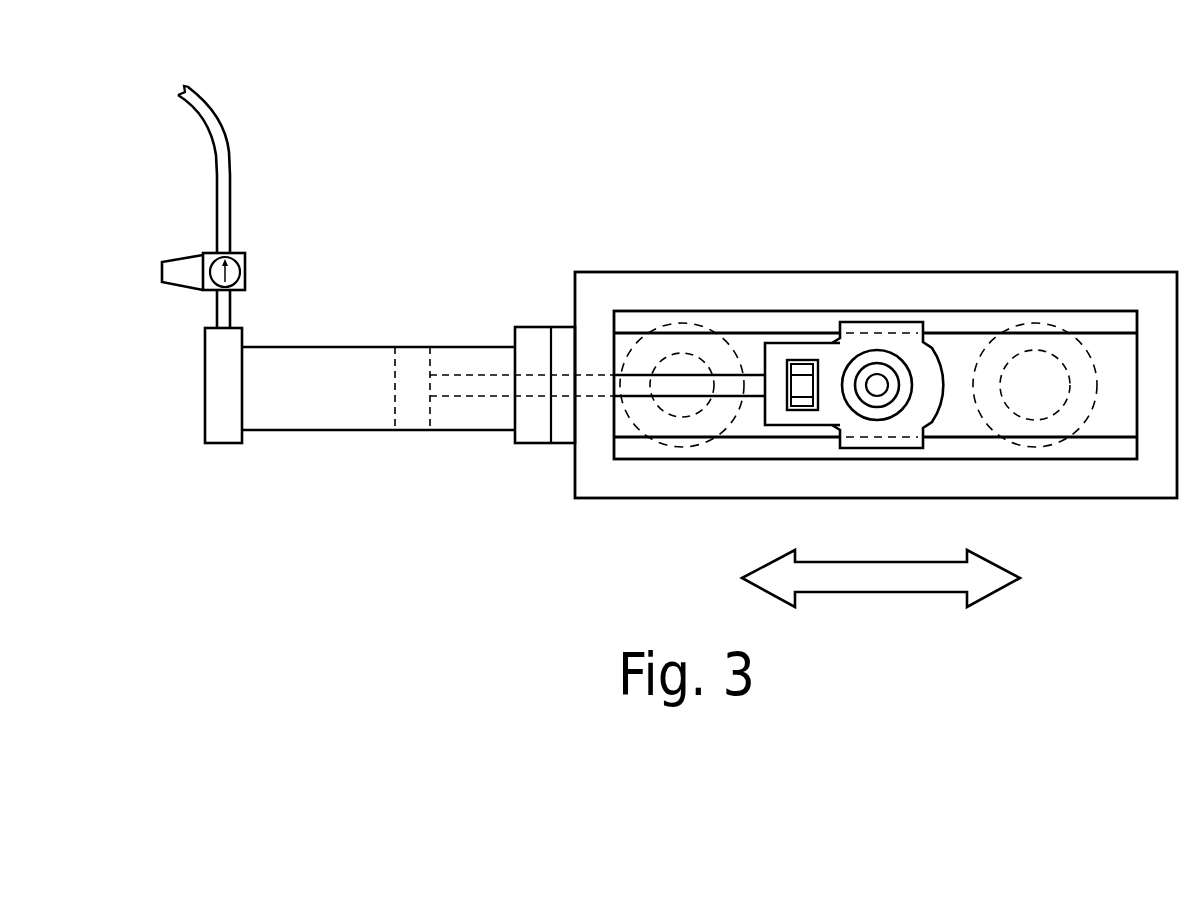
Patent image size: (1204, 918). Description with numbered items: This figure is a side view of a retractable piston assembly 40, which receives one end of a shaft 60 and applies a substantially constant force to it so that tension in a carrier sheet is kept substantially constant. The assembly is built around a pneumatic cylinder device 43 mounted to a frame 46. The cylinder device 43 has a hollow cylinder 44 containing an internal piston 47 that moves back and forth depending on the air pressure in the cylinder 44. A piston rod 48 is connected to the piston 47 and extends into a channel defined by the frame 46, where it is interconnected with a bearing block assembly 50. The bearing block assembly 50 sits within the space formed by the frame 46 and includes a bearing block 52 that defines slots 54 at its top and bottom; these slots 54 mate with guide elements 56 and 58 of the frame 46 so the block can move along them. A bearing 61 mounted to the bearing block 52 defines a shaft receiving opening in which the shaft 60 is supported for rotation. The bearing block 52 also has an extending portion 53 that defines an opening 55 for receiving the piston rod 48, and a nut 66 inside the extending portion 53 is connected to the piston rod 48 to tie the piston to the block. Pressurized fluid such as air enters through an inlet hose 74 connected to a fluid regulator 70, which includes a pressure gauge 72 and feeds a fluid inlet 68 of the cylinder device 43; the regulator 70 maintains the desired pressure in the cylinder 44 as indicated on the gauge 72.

The retractable piston assembly 40 is at (737, 195).
The pneumatic cylinder device 43 is at (343, 410).
The hollow cylinder 44 is at (288, 365).
The frame 46 is at (1107, 478).
The internal piston 47 is at (403, 365).
The piston rod 48 is at (680, 388).
The bearing block assembly 50 is at (950, 420).
The bearing block 52 is at (847, 342).
The extending portion 53 is at (773, 350).
The slots 54 is at (890, 327).
The opening 55 is at (758, 400).
The guide element 56 is at (633, 320).
The guide element 58 is at (692, 452).
The shaft 60 is at (877, 385).
The bearing 61 is at (903, 385).
The nut 66 is at (802, 383).
The fluid inlet 68 is at (220, 308).
The fluid regulator 70 is at (198, 255).
The pressure gauge 72 is at (235, 270).
The inlet hose 74 is at (230, 157).